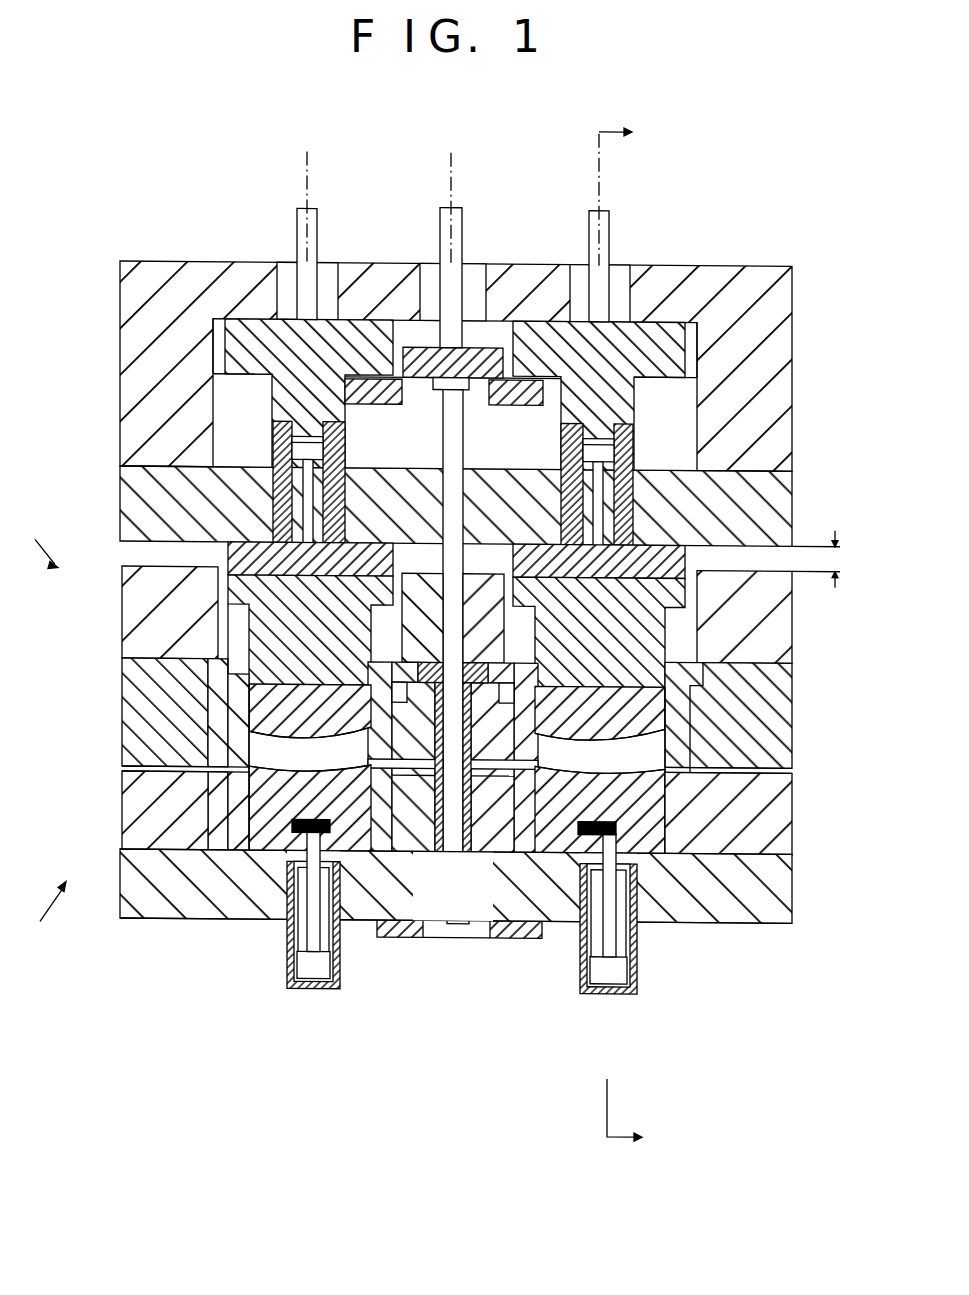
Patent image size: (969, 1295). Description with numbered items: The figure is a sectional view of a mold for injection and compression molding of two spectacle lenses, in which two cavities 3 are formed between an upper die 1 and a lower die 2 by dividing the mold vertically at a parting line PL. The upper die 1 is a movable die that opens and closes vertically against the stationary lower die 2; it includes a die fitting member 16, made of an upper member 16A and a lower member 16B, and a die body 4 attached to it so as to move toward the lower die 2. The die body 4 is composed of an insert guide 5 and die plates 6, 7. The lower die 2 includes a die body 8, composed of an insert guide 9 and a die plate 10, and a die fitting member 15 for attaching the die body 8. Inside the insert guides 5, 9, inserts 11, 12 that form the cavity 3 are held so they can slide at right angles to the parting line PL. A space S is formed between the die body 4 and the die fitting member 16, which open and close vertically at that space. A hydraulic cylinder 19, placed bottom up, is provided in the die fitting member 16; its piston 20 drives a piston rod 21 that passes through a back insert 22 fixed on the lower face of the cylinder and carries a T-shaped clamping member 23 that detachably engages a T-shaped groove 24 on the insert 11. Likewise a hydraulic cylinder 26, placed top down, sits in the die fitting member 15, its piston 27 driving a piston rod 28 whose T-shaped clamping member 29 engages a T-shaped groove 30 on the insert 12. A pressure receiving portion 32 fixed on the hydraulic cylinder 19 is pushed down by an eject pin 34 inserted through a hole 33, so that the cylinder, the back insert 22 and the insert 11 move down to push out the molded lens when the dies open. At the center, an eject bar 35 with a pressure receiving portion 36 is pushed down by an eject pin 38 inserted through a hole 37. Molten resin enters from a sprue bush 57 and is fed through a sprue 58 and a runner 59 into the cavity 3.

The upper die 1 is at (38, 536).
The lower die 2 is at (340, 626).
The cavity 3 is at (215, 837).
The die body 4 is at (140, 678).
The insert guide 5 is at (210, 688).
The die plate 6 is at (220, 700).
The die plate 7 is at (150, 575).
The die body 8 is at (130, 852).
The insert guide 9 is at (210, 820).
The die plate 10 is at (205, 790).
The insert 11 is at (255, 718).
The insert 12 is at (225, 777).
The die fitting member 15 is at (160, 918).
The die fitting member 16 is at (52, 392).
The upper member 16A is at (126, 406).
The lower member 16B is at (126, 474).
The hydraulic cylinder 19 is at (350, 482).
The piston 20 is at (287, 430).
The piston rod 21 is at (301, 478).
The back insert 22 is at (235, 590).
The T-shaped clamping member 23 is at (245, 628).
The T-shaped groove 24 is at (307, 712).
The hydraulic cylinder 26 is at (325, 987).
The piston 27 is at (300, 977).
The piston rod 28 is at (300, 960).
The T-shaped clamping member 29 is at (307, 900).
The T-shaped groove 30 is at (270, 842).
The pressure receiving portion 32 is at (228, 320).
The hole 33 is at (280, 275).
The eject pin 34 is at (305, 206).
The eject bar 35 is at (462, 428).
The pressure receiving portion 36 is at (487, 353).
The hole 37 is at (422, 290).
The eject pin 38 is at (454, 205).
The sprue bush 57 is at (463, 925).
The sprue 58 is at (420, 915).
The runner 59 is at (382, 852).
The parting line PL is at (70, 770).
The space S is at (823, 559).